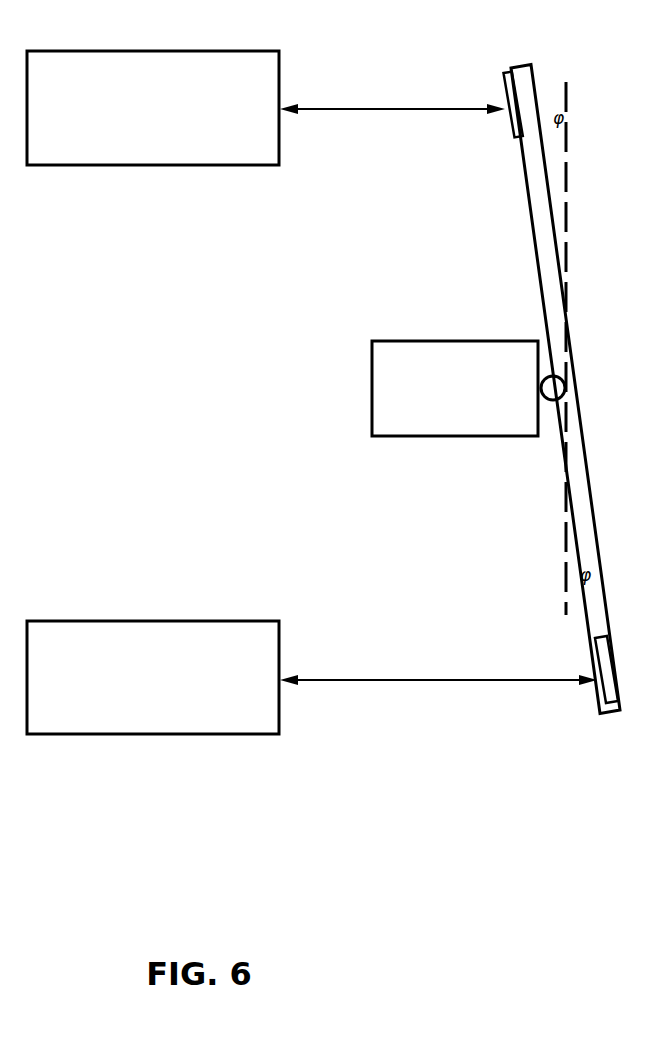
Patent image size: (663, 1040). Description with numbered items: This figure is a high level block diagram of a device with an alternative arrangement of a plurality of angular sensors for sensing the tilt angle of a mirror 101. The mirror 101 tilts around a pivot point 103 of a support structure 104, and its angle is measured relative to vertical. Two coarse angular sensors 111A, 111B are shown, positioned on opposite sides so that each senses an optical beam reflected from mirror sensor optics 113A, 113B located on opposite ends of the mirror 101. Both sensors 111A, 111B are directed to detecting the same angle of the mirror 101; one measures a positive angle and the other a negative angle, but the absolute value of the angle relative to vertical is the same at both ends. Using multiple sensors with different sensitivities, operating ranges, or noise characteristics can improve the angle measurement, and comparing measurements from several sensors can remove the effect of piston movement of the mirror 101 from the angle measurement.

The mirror 101 is at (519, 64).
The pivot point 103 is at (552, 376).
The support structure 104 is at (455, 388).
The coarse angular sensor 111A is at (153, 108).
The coarse angular sensor 111B is at (153, 677).
The mirror sensor optics 113A is at (510, 132).
The mirror sensor optics 113B is at (601, 690).